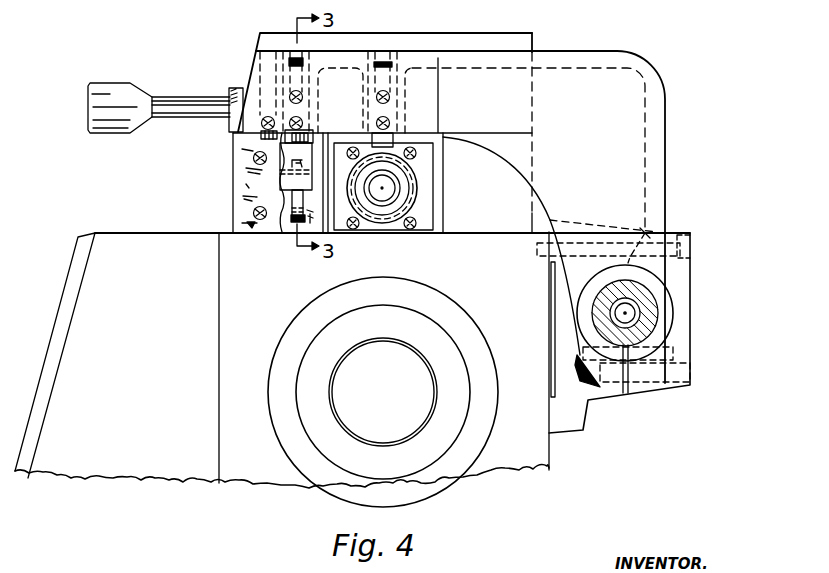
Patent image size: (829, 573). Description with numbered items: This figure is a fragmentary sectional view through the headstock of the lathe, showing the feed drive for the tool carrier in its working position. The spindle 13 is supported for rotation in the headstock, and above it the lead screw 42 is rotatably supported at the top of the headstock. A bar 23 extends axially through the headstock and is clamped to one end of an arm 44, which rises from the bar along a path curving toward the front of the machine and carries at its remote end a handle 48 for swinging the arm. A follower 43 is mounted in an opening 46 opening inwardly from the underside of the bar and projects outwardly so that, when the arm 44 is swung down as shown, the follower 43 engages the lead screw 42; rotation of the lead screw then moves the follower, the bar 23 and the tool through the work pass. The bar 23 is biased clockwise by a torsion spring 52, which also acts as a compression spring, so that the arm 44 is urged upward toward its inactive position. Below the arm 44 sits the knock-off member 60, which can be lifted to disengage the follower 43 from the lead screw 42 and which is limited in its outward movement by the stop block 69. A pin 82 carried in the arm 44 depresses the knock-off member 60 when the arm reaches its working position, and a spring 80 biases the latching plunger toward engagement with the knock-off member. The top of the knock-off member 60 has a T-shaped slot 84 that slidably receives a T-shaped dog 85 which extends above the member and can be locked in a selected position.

The spindle 13 is at (318, 420).
The bar 23 is at (657, 315).
The lead screw 42 is at (417, 191).
The follower 43 is at (392, 143).
The arm 44 is at (640, 150).
The opening 46 is at (363, 105).
The handle 48 is at (125, 88).
The torsion spring 52 is at (636, 321).
The knock-off member 60 is at (308, 181).
The stop block 69 is at (263, 234).
The spring 80 is at (268, 187).
The pin 82 is at (312, 134).
The T-shaped slot 84 is at (267, 166).
The T-shaped dog 85 is at (277, 162).